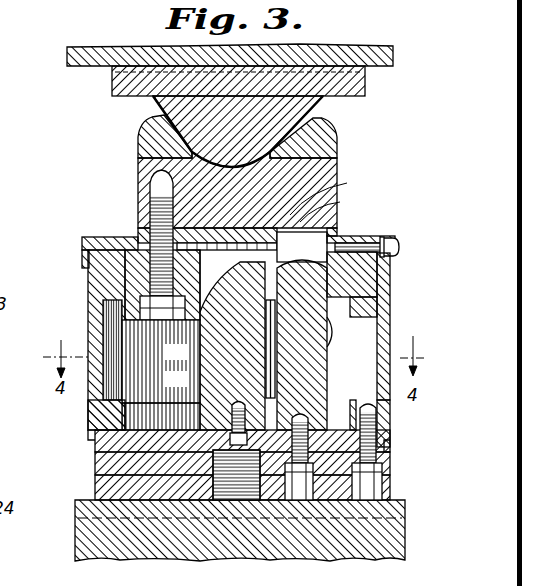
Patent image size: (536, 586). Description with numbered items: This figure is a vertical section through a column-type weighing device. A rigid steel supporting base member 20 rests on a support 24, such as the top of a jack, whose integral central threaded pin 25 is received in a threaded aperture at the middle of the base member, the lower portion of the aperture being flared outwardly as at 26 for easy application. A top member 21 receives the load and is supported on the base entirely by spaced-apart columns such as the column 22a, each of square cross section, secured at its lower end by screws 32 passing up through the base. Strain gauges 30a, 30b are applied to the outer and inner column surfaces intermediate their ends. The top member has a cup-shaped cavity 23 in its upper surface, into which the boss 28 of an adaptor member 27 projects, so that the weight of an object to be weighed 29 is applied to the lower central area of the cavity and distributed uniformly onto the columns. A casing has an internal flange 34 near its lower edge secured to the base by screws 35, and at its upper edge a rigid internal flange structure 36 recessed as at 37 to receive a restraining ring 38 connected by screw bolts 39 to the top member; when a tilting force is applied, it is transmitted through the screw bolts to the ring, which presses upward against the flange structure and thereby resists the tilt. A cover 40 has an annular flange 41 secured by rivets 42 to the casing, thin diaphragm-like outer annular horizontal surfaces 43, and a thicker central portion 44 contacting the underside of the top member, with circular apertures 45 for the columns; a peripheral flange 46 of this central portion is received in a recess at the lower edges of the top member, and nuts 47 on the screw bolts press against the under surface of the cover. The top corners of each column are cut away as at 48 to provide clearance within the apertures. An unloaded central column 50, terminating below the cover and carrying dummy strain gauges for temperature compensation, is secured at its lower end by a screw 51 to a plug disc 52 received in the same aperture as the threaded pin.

The object to be weighed 29 is at (84, 65).
The adaptor member 27 is at (348, 89).
The boss 28 is at (340, 150).
The cavity 23 is at (148, 133).
The top member 21 is at (138, 162).
The central portion of cover 44 is at (347, 183).
The circular apertures 45 is at (340, 202).
The screw bolts 39 is at (150, 193).
The flange 46 is at (138, 227).
The cover 40 is at (82, 241).
The nuts 47 is at (84, 256).
The internal flange structure 36 is at (113, 270).
The recess 37 is at (105, 306).
The central column 50 is at (225, 352).
The internal flange 34 is at (113, 414).
The screw 51 is at (217, 405).
The cut-away top corners 48 is at (302, 247).
The column 22a is at (308, 392).
The strain gauge on outer column surface 30a is at (330, 346).
The strain gauge on inner column surface 30b is at (277, 368).
The outer annular horizontal surfaces 43 is at (354, 236).
The annular flange 41 is at (396, 247).
The rivets 42 is at (395, 255).
The restraining ring 38 is at (382, 301).
The screws 35 is at (389, 424).
The screws 32 is at (385, 446).
The plug disc 52 is at (91, 434).
The threaded pin 25 is at (95, 453).
The flared portion 26 is at (95, 475).
The supporting base member 20 is at (95, 494).
The support 24 is at (80, 536).